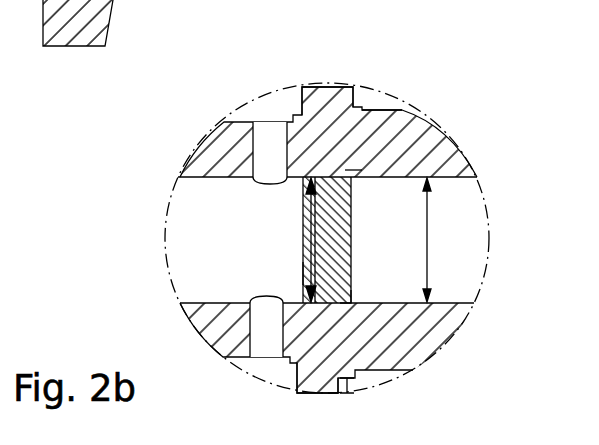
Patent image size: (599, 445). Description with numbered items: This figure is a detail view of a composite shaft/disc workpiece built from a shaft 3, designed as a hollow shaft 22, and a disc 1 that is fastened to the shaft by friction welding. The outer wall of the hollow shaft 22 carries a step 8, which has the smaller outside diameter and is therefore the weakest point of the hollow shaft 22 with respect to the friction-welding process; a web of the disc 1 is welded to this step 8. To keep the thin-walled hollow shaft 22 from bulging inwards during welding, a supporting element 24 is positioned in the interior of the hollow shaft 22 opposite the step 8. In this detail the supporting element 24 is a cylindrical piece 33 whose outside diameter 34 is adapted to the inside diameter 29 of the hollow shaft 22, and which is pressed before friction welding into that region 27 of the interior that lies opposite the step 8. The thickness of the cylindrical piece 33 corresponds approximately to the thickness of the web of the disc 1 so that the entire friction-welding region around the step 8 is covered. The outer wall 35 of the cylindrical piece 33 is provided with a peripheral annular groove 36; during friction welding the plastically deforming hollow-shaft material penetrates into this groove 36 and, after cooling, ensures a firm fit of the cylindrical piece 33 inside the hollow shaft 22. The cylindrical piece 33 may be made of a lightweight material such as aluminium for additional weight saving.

The disc 1 is at (303, 100).
The step 8 is at (352, 88).
The shaft 3 is at (402, 110).
The outer wall of the cylindrical piece 35 is at (345, 170).
The hollow shaft 22 is at (430, 140).
The inside diameter of the hollow shaft 29 is at (427, 205).
The supporting element 24 is at (352, 218).
The outside diameter of the cylindrical piece 34 is at (303, 221).
The cylindrical piece 33 is at (318, 272).
The region of the interior of the hollow shaft 27 is at (351, 288).
The peripheral annular groove 36 is at (326, 303).